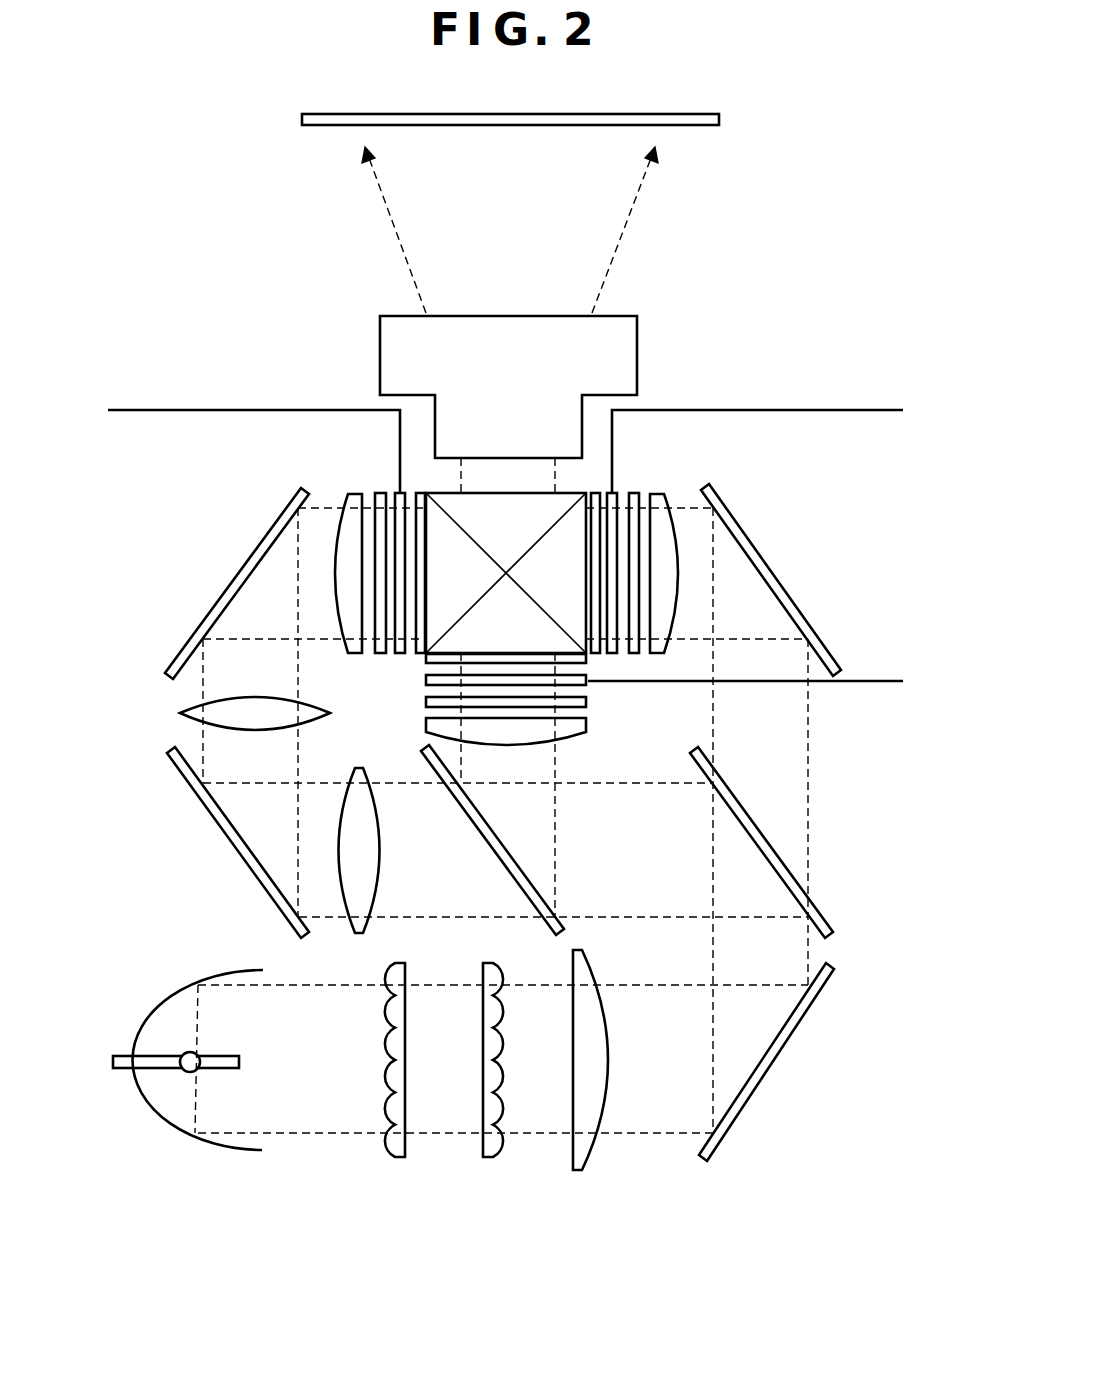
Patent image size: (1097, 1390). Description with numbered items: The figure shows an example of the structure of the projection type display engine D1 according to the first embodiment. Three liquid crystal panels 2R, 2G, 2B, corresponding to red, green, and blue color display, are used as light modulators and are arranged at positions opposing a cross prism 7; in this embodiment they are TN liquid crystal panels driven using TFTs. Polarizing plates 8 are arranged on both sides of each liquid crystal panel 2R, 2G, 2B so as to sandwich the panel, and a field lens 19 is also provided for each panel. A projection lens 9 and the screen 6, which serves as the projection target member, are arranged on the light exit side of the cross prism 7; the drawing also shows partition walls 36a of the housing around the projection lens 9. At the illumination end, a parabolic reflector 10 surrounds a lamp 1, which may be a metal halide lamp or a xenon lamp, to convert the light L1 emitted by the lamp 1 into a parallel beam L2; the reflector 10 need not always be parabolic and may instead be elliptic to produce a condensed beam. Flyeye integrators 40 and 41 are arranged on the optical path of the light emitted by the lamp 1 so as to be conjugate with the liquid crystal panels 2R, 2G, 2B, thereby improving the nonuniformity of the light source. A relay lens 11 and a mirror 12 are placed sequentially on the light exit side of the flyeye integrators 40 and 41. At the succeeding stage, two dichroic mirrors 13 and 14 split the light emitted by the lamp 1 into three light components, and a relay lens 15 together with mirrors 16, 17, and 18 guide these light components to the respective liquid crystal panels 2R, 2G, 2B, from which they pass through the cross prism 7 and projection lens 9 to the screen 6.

The screen 6 is at (697, 114).
The cross prism 7 is at (520, 493).
The projection lens 9 is at (637, 325).
The housing partition wall 36a is at (135, 410).
The polarizing plates 8 is at (378, 493).
The liquid crystal panel 2R is at (398, 493).
The liquid crystal panel 2G is at (588, 684).
The liquid crystal panel 2B is at (614, 493).
The field lens 19 is at (335, 490).
The mirror 18 is at (228, 582).
The mirror 16 is at (798, 598).
The relay lens 15 is at (180, 713).
The mirror 17 is at (218, 828).
The dichroic mirror 14 is at (493, 828).
The dichroic mirror 13 is at (740, 800).
The mirror 12 is at (778, 1058).
The lamp 1 is at (185, 1068).
The parabolic reflector 10 is at (227, 1148).
The flyeye integrator 40 is at (400, 1160).
The flyeye integrator 41 is at (490, 1160).
The relay lens 11 is at (590, 1162).
The light L1 is at (196, 1112).
The parallel beam L2 is at (318, 1133).
The projection type display engine D1 is at (800, 254).